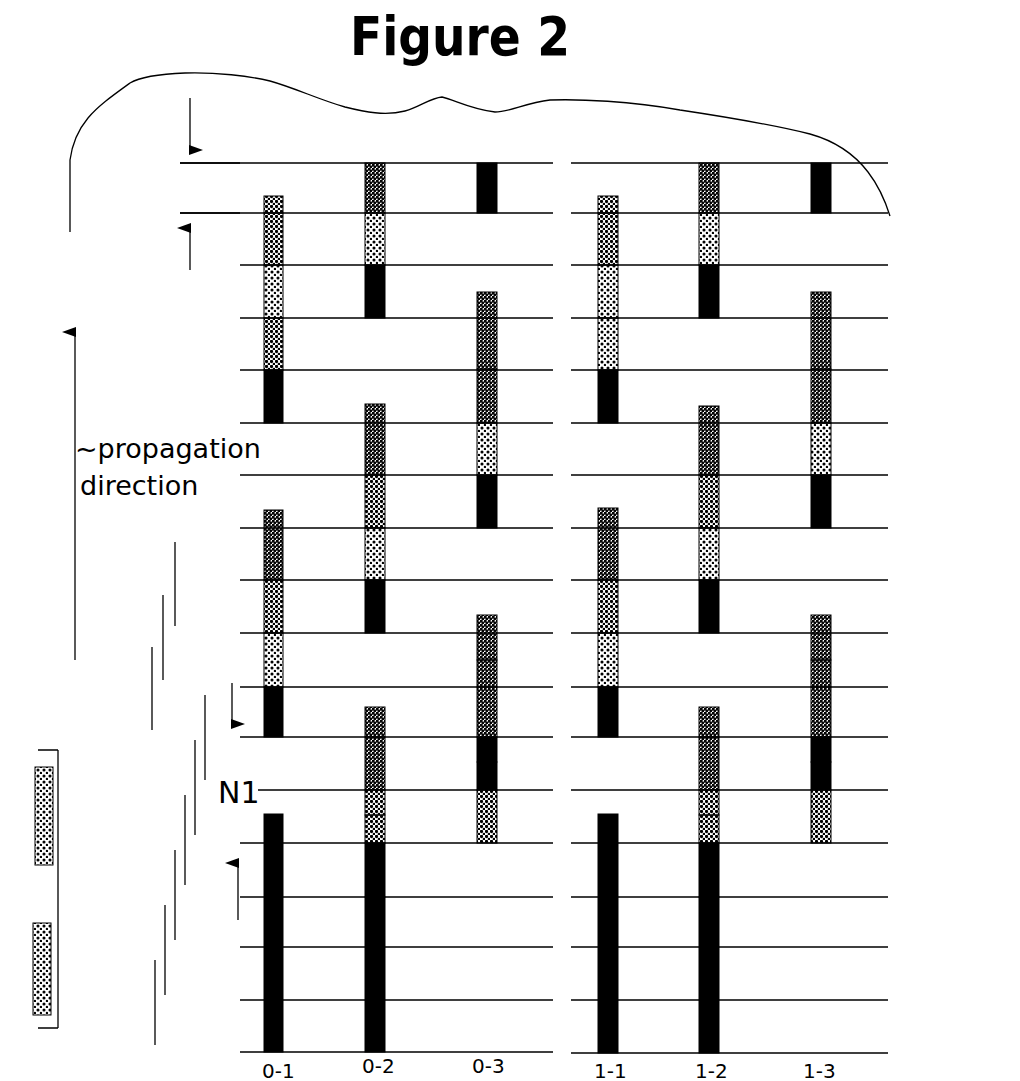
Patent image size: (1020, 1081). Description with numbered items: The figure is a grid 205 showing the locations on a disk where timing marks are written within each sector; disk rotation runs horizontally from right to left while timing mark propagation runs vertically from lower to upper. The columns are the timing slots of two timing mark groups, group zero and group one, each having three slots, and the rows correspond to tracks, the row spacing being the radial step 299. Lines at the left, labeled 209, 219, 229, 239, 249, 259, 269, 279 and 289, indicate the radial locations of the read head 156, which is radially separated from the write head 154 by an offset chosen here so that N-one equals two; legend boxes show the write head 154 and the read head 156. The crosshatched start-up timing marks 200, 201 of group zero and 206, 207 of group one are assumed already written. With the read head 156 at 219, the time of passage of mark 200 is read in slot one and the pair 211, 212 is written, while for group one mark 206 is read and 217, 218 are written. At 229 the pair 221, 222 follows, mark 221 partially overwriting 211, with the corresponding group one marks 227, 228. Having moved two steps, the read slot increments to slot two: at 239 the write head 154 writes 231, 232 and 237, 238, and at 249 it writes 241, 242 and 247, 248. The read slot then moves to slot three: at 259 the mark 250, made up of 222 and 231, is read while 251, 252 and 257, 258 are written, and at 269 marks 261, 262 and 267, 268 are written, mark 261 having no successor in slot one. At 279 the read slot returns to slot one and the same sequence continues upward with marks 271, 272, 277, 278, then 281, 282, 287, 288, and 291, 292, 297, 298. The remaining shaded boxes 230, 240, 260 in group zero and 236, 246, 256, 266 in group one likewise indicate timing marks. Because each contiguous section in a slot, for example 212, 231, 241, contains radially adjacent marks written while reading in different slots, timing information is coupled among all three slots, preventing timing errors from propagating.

The grid 205 is at (460, 90).
The radial step 299 is at (178, 188).
The write head 154 is at (54, 799).
The read head 156 is at (52, 969).
The read head radial location 289 is at (177, 579).
The read head radial location 279 is at (165, 631).
The read head radial location 269 is at (154, 692).
The read head radial location 259 is at (205, 746).
The read head radial location 249 is at (194, 799).
The read head radial location 239 is at (185, 852).
The read head radial location 229 is at (175, 904).
The read head radial location 219 is at (164, 967).
The read head radial location 209 is at (154, 1029).
The start-up timing mark 200 is at (264, 1042).
The start-up timing mark 206 is at (596, 1042).
The cell 292 is at (286, 409).
The timing mark 261 is at (286, 561).
The timing mark 251 is at (286, 621).
The timing mark 242 is at (286, 671).
The timing mark 232 is at (286, 724).
The cell 281 is at (388, 452).
The cell 271 is at (388, 506).
The timing mark 262 is at (388, 557).
The timing mark 252 is at (388, 621).
The timing mark 221 is at (363, 777).
The cell 240 is at (363, 801).
The timing mark 211 is at (363, 831).
The cell 230 is at (363, 861).
The start-up timing mark 201 is at (363, 927).
The cell 291 is at (500, 411).
The cell 282 is at (500, 452).
The cell 272 is at (500, 506).
The timing mark 241 is at (475, 672).
The cell 260 is at (475, 691).
The timing mark 231 is at (475, 722).
The timing mark 250 is at (475, 746).
The timing mark 222 is at (475, 777).
The timing mark 212 is at (475, 831).
The cell 298 is at (621, 411).
The cell 267 is at (621, 559).
The cell 257 is at (621, 622).
The cell 248 is at (621, 672).
The timing mark 238 is at (621, 722).
The cell 287 is at (722, 452).
The cell 277 is at (722, 506).
The cell 268 is at (722, 557).
The cell 258 is at (722, 621).
The timing mark 227 is at (697, 777).
The cell 246 is at (697, 801).
The timing mark 217 is at (697, 831).
The cell 236 is at (697, 861).
The start-up timing mark 207 is at (697, 927).
The cell 297 is at (834, 411).
The cell 288 is at (834, 452).
The cell 278 is at (834, 506).
The timing mark 247 is at (809, 672).
The cell 266 is at (809, 691).
The timing mark 237 is at (809, 722).
The cell 256 is at (809, 746).
The timing mark 228 is at (809, 777).
The timing mark 218 is at (809, 831).